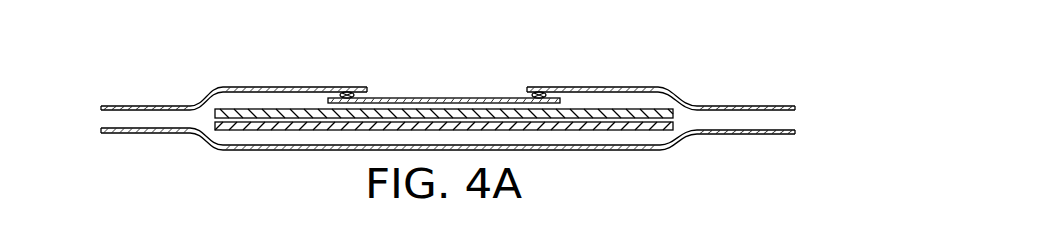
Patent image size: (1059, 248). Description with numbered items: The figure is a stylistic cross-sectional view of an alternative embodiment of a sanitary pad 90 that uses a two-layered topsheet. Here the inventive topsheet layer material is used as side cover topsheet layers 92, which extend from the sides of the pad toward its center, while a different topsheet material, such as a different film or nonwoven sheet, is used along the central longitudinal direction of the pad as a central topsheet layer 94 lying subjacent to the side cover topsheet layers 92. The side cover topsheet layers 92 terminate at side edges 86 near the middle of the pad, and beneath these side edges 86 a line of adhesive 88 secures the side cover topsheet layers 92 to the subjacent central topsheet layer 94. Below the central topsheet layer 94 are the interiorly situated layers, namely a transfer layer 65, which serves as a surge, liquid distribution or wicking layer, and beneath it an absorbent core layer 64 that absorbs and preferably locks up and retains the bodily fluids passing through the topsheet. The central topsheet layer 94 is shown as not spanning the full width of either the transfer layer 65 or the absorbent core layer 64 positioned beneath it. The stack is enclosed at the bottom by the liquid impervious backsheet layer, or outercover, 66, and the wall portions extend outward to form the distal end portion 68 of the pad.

The sanitary pad 90 is at (591, 69).
The side cover topsheet layers 92 is at (222, 88).
The liquid impervious backsheet layer 66 is at (203, 138).
The distal portion of balloon 68 is at (737, 106).
The side edges 86 is at (367, 88).
The line of adhesive 88 is at (345, 91).
The central topsheet layer 94 is at (470, 100).
The transfer layer 65 is at (415, 110).
The absorbent core layer 64 is at (612, 130).